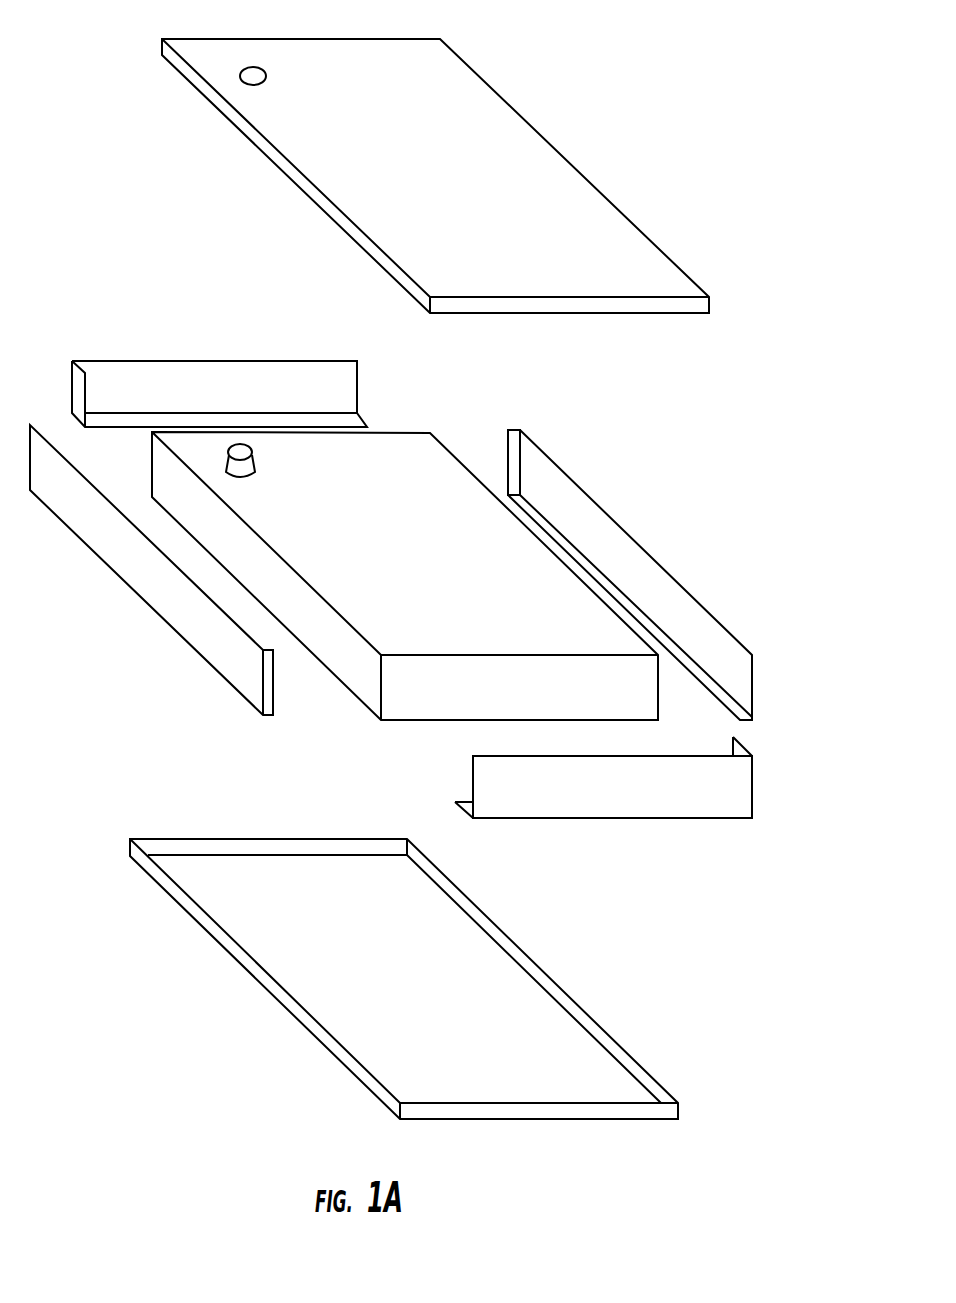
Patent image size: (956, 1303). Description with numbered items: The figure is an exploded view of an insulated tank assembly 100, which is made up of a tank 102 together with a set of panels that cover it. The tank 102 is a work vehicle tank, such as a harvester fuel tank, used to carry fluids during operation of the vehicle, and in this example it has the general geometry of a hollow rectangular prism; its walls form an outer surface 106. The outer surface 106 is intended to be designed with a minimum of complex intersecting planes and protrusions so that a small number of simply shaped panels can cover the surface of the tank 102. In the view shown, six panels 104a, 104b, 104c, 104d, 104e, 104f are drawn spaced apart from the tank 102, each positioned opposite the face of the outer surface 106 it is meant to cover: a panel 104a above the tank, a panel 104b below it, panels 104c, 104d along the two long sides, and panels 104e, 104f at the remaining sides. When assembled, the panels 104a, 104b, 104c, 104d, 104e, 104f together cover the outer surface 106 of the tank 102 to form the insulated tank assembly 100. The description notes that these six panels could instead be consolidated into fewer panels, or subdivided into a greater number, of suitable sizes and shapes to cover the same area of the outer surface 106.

The insulated tank assembly 100 is at (580, 110).
The tank 102 is at (405, 722).
The panel 104a is at (310, 192).
The panel 104b is at (522, 998).
The panel 104c is at (172, 602).
The panel 104d is at (628, 557).
The panel 104e is at (199, 372).
The panel 104f is at (617, 810).
The outer surface 106 is at (443, 472).